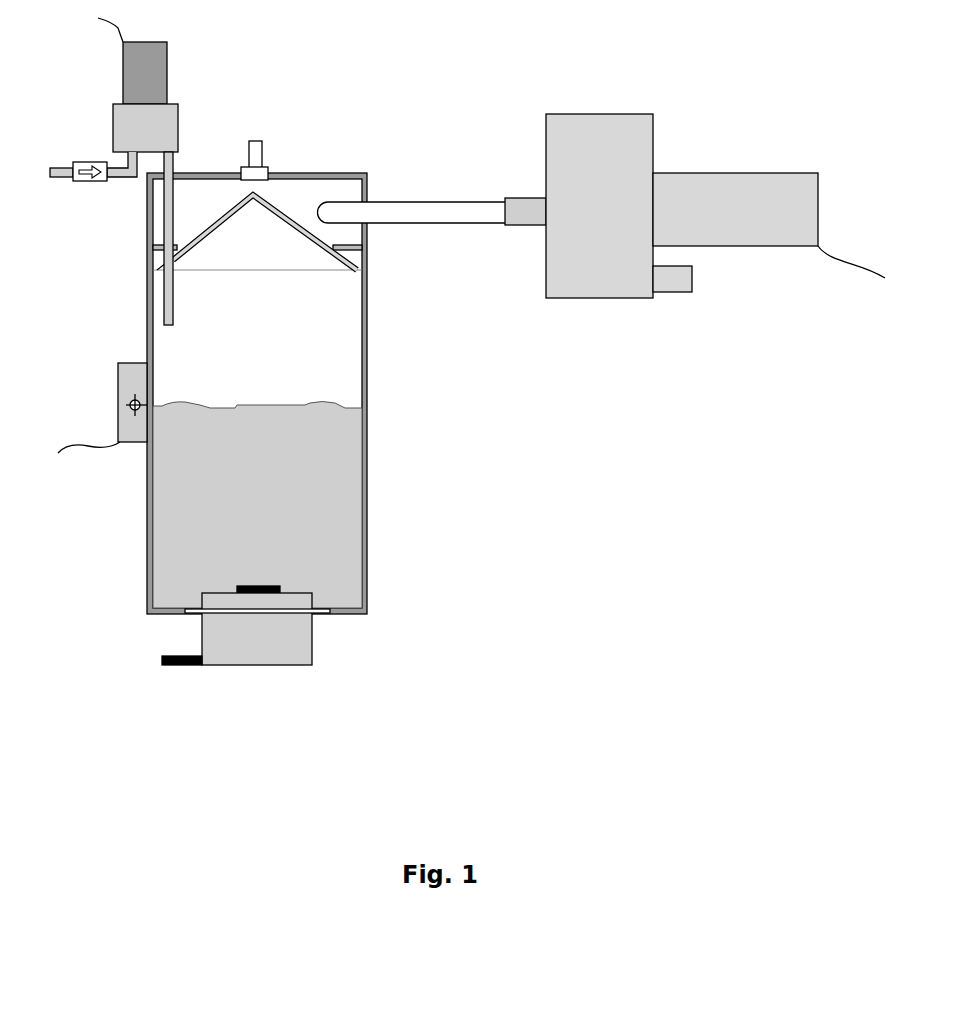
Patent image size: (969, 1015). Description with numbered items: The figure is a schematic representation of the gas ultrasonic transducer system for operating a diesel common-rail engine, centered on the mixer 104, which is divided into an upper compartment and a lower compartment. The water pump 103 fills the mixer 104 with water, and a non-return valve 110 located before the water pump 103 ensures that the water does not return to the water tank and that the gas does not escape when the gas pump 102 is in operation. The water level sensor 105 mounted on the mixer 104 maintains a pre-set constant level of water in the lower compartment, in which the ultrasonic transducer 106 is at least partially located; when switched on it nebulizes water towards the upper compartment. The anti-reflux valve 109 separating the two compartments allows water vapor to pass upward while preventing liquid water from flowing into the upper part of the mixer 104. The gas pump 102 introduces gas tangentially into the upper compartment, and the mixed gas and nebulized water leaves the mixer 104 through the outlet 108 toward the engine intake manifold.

The gas pump 102 is at (583, 208).
The water pump 103 is at (143, 127).
The mixer 104 is at (328, 175).
The water level sensor 105 is at (135, 380).
The ultrasonic transducer 106 is at (272, 632).
The outlet 108 is at (258, 150).
The anti-reflux valve 109 is at (355, 270).
The non-return valve 110 is at (83, 173).